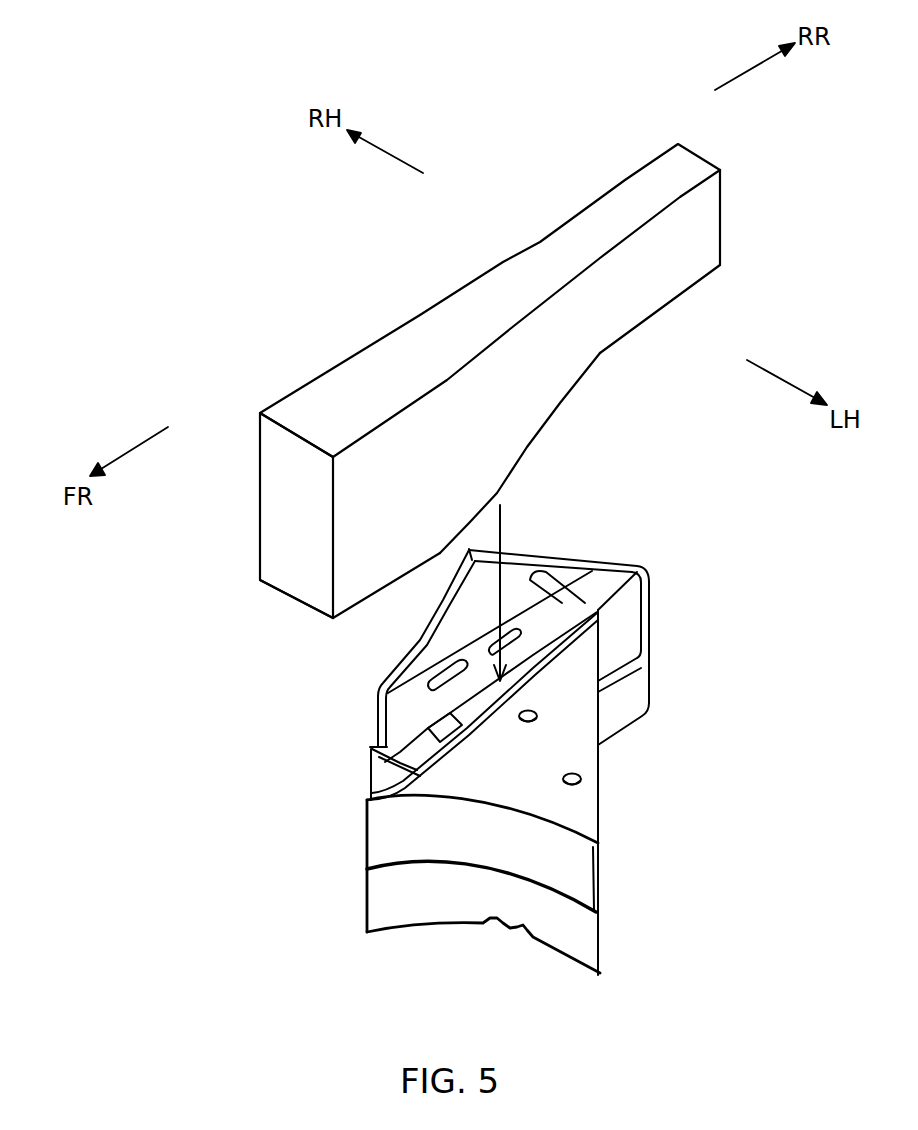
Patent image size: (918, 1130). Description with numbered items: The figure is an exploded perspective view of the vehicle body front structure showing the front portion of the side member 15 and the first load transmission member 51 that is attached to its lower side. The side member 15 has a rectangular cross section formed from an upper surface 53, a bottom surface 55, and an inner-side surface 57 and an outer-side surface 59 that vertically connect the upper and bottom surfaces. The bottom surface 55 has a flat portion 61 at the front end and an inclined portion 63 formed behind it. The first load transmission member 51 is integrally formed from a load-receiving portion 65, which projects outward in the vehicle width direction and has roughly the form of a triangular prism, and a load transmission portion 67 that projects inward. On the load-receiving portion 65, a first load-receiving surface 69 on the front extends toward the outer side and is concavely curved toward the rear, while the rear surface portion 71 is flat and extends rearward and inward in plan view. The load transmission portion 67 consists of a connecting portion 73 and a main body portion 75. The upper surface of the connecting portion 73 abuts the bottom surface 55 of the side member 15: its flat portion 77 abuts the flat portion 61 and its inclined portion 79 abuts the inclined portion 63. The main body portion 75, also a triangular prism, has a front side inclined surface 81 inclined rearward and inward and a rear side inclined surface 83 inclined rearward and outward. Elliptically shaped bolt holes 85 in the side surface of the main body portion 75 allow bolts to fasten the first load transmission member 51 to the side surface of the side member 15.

The side member 15 is at (461, 398).
The first load transmission member 51 is at (523, 742).
The upper surface 53 is at (343, 380).
The bottom surface 55 is at (290, 597).
The inner-side surface 57 is at (258, 503).
The outer-side surface 59 is at (420, 437).
The flat portion 61 is at (377, 598).
The inclined portion 63 is at (474, 519).
The load-receiving portion 65 is at (537, 752).
The load transmission portion 67 is at (603, 557).
The first load-receiving surface 69 is at (542, 858).
The rear surface portion 71 is at (600, 801).
The connecting portion 73 is at (445, 735).
The main body portion 75 is at (513, 577).
The flat portion 77 is at (372, 748).
The inclined portion 79 is at (617, 563).
The front side inclined surface 81 is at (412, 630).
The rear side inclined surface 83 is at (565, 603).
The bolt holes 85 is at (438, 683).